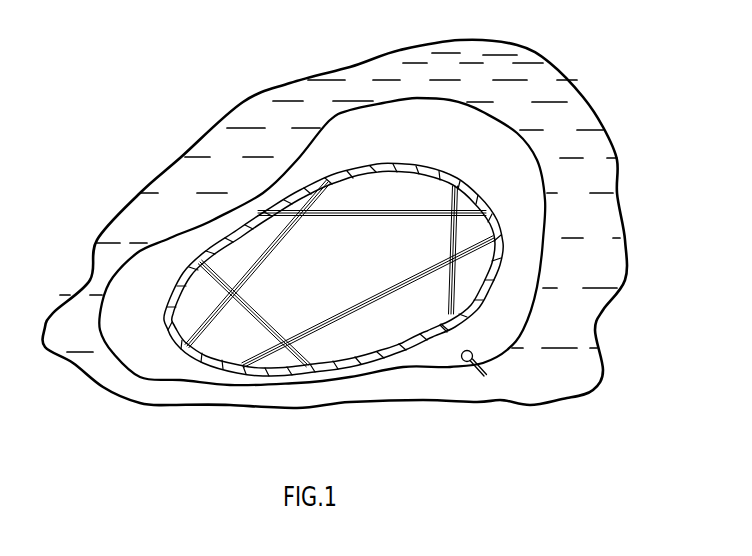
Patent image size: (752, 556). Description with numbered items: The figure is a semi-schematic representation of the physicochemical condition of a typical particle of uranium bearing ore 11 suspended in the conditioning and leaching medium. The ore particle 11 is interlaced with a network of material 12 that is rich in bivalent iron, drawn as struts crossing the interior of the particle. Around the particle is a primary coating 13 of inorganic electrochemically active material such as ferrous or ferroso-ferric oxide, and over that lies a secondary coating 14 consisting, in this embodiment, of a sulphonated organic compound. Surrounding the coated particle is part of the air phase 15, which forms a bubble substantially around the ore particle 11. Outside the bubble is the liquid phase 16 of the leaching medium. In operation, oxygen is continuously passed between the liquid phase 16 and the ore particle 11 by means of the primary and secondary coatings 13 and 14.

The ore particle 11 is at (236, 353).
The network of bivalent-iron-rich material 12 is at (412, 213).
The primary coating 13 is at (478, 189).
The secondary coating 14 is at (488, 331).
The air phase 15 is at (392, 362).
The liquid phase 16 is at (473, 398).